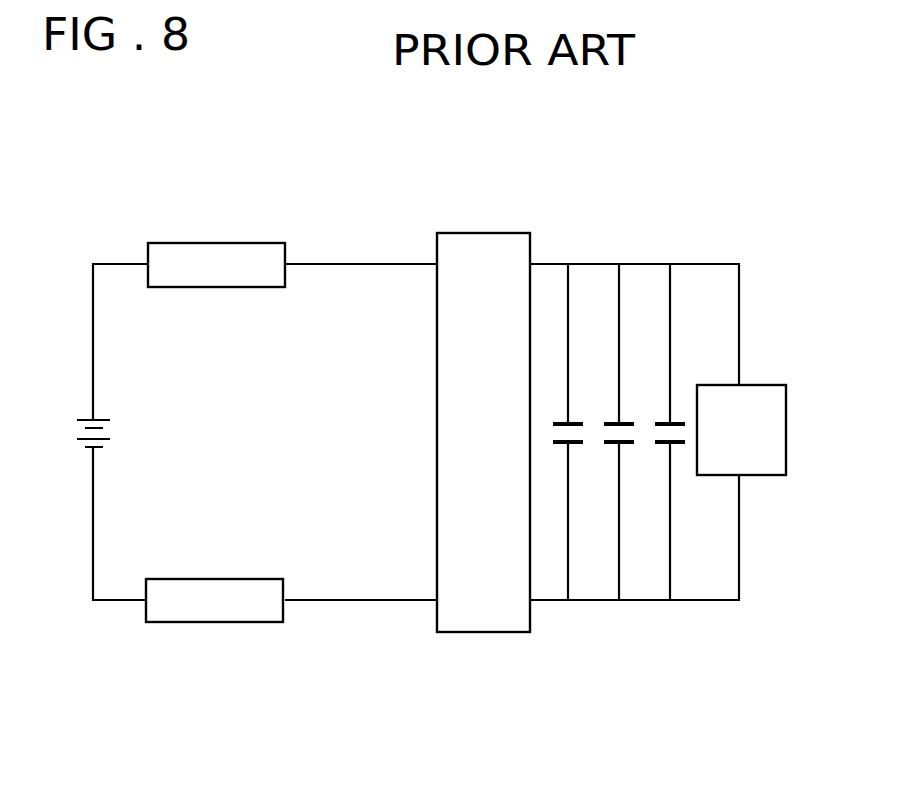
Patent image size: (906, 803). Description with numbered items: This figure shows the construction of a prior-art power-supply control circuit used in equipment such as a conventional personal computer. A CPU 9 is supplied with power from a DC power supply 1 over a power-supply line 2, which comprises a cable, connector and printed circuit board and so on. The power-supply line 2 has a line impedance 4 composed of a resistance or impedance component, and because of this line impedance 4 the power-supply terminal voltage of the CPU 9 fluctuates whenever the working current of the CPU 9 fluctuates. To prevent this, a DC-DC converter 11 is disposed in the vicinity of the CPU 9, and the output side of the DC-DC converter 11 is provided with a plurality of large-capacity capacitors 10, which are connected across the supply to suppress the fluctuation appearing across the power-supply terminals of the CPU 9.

The DC power supply 1 is at (105, 420).
The power-supply line 2 is at (301, 264).
The line impedance 4 is at (165, 243).
The CPU 9 is at (762, 385).
The capacitors 10 is at (573, 423).
The DC-DC converter 11 is at (503, 233).